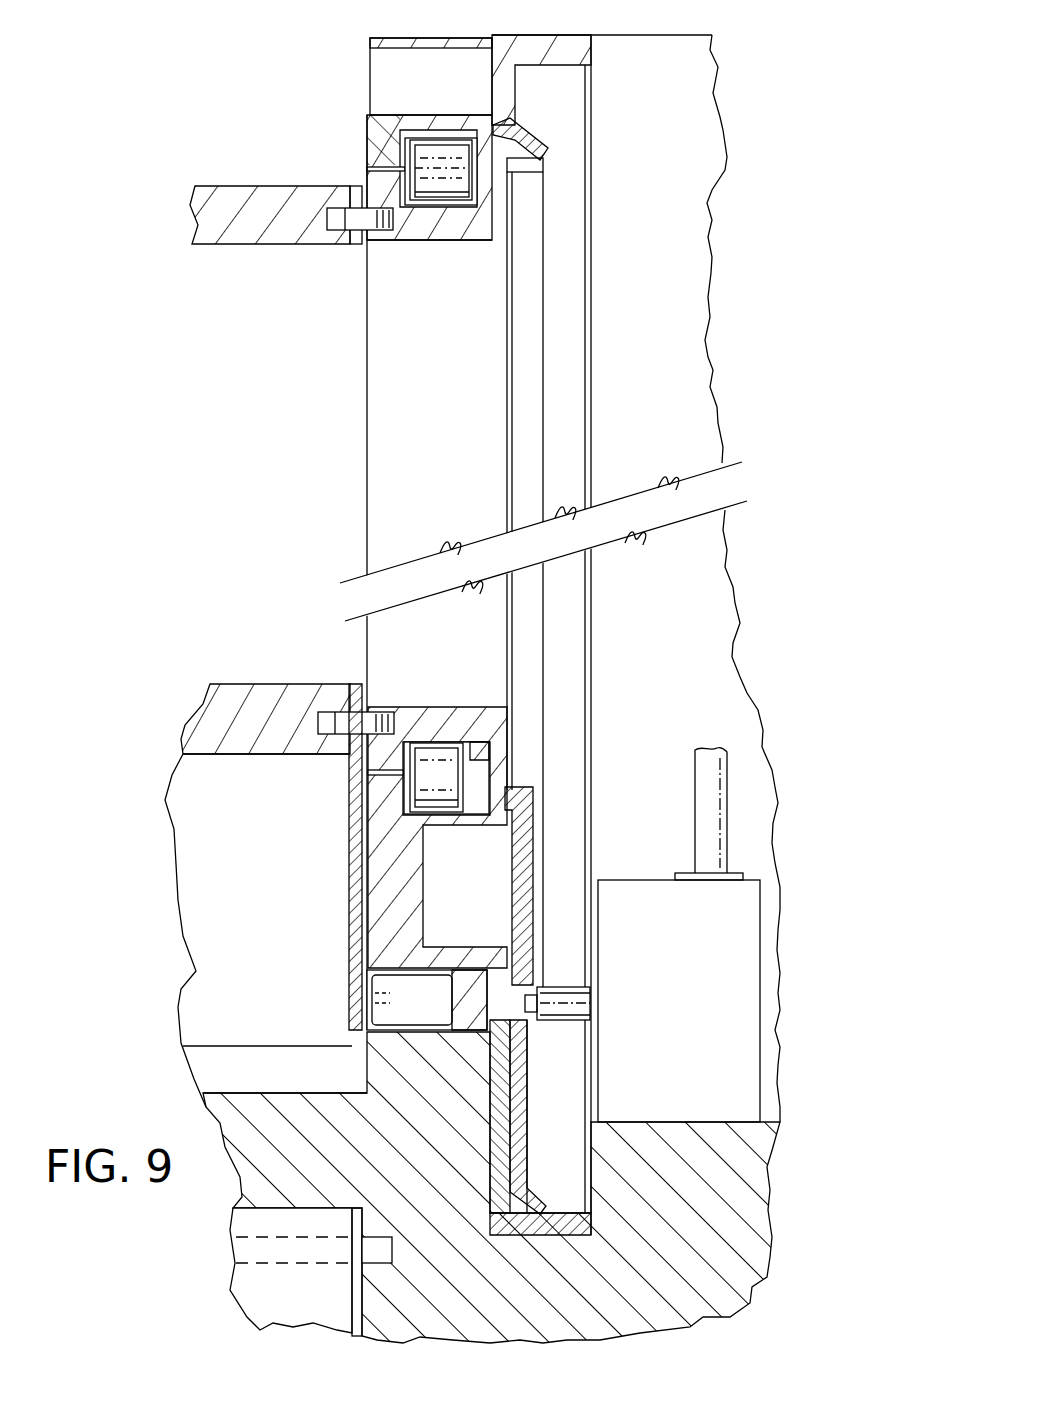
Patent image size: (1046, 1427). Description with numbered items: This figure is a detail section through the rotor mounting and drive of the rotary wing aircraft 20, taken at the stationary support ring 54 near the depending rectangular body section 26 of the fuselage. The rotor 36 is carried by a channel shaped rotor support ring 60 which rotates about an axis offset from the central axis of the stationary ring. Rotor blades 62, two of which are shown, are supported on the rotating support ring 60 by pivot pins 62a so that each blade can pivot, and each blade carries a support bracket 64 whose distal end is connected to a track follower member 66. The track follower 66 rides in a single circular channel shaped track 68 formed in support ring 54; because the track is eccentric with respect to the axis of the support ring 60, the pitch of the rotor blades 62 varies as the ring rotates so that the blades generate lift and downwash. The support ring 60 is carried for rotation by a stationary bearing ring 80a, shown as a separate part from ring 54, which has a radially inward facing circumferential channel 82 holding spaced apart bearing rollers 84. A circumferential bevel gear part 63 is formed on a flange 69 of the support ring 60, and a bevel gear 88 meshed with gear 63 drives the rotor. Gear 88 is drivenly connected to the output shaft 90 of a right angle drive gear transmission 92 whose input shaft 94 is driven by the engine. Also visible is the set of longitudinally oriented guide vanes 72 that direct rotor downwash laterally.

The rotary wing aircraft 20 is at (302, 72).
The depending rectangular body section 26 is at (328, 1220).
The rotor 36 is at (202, 164).
The support ring 54 is at (533, 38).
The rotor support ring 60 is at (397, 248).
The rotor blade 62 is at (222, 250).
The pivot pin 62a is at (345, 234).
The bevel gear part 63 is at (548, 126).
The support bracket 64 is at (350, 775).
The track follower member 66 is at (362, 1008).
The channel shaped track 68 is at (374, 62).
The flange 69 is at (455, 145).
The guide vanes 72 is at (232, 1257).
The bearing ring 80a is at (367, 160).
The circumferential channel 82 is at (442, 132).
The bearing roller 84 is at (512, 258).
The bevel gear 88 is at (490, 1212).
The output shaft 90 is at (565, 1007).
The right angle drive gear transmission 92 is at (658, 925).
The input shaft 94 is at (700, 790).